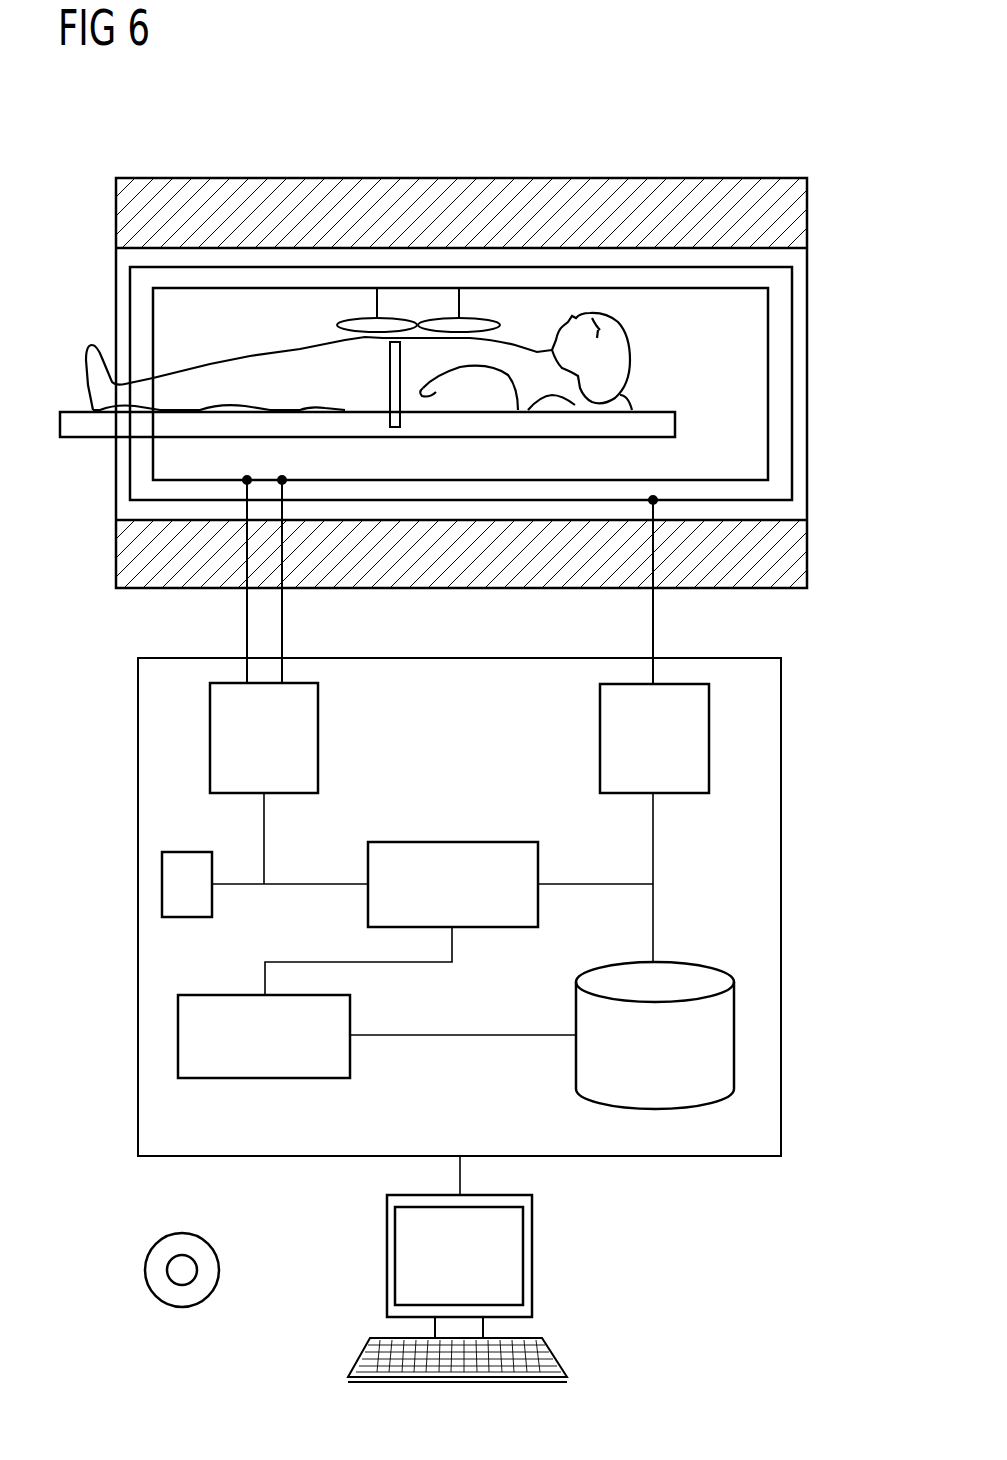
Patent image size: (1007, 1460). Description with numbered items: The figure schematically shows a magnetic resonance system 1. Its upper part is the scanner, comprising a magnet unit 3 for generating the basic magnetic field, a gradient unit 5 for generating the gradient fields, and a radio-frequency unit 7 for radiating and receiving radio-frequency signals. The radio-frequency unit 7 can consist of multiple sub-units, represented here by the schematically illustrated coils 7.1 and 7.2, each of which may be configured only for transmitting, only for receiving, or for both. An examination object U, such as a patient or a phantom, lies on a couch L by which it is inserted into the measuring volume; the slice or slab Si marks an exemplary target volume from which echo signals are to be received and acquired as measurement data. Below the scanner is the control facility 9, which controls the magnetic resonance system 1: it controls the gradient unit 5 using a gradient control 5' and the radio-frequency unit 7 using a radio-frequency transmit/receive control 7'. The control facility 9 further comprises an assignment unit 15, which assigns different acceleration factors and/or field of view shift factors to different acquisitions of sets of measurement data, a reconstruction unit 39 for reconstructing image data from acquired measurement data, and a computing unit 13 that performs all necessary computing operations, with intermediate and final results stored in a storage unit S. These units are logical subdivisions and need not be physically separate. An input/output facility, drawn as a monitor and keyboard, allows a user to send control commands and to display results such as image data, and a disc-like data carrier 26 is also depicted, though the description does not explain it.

The magnetic resonance system 1 is at (703, 122).
The magnet unit 3 is at (459, 180).
The gradient unit 5 is at (485, 383).
The radio-frequency unit 7 is at (497, 391).
The coil 7.1 is at (337, 326).
The coil 7.2 is at (500, 322).
The slice or slab Si is at (400, 427).
The examination object U is at (88, 344).
The couch L is at (73, 410).
The control facility 9 is at (781, 905).
The radio-frequency transmit/receive control 7' is at (294, 738).
The gradient control 5' is at (627, 738).
The reconstruction unit 39 is at (190, 852).
The computing unit 13 is at (455, 842).
The assignment unit 15 is at (215, 995).
The storage unit S is at (682, 962).
The data carrier / storage medium 26 is at (219, 1272).